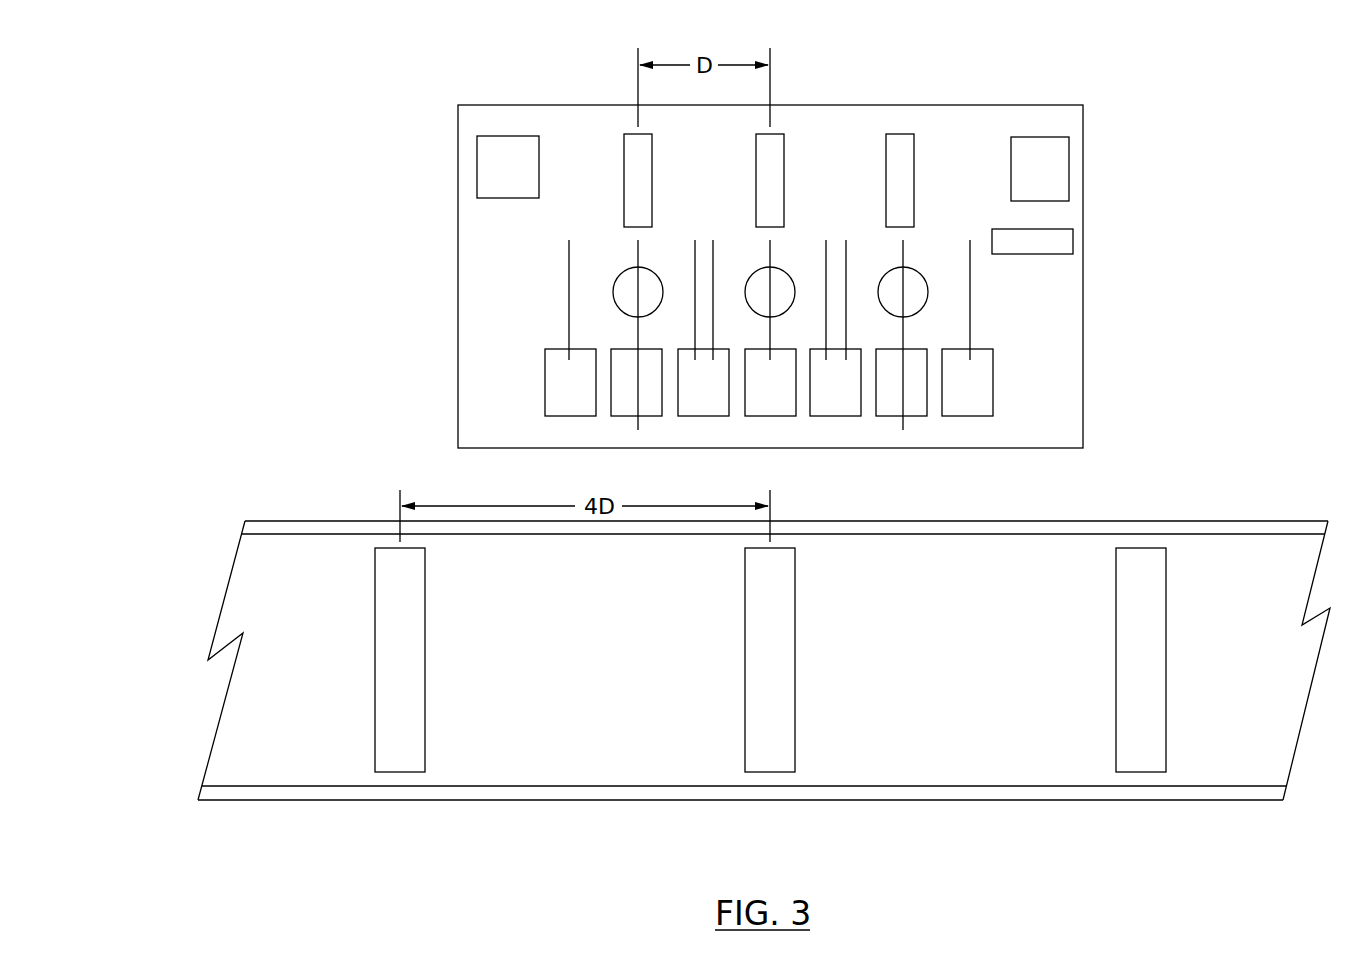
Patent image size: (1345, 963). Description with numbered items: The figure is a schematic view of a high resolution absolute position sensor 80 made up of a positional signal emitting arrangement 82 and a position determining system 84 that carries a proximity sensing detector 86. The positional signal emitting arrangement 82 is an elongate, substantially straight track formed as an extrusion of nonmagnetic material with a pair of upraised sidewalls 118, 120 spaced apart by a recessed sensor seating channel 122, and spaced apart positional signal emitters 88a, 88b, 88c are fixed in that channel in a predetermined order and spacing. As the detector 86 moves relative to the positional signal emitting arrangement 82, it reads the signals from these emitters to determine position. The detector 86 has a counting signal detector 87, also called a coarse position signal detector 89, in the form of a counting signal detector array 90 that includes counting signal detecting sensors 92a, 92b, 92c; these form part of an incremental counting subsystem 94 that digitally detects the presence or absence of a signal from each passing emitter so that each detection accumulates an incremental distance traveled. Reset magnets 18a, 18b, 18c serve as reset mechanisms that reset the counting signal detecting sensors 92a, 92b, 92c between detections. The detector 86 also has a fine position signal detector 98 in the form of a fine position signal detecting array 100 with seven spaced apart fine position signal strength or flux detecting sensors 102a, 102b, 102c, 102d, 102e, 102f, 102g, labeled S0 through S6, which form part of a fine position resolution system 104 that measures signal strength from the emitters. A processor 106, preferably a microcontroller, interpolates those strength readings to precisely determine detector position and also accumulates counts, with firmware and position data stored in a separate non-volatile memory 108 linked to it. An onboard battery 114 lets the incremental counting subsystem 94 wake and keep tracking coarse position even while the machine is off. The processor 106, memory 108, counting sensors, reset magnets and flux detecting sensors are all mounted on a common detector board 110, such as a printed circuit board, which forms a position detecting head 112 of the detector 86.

The high resolution absolute position sensor 80 is at (222, 402).
The positional signal emitting arrangement 82 is at (207, 568).
The position determining system 84 is at (303, 199).
The proximity sensing detector 86 is at (420, 121).
The counting signal detector 87 is at (550, 318).
The coarse position signal detector 89 is at (556, 339).
The counting signal detector array 90 is at (600, 269).
The counting signal detecting sensor 92a is at (625, 268).
The counting signal detecting sensor 92b is at (790, 268).
The counting signal detecting sensor 92c is at (915, 268).
The incremental counting subsystem 94 is at (936, 297).
The fine position signal detector 98 is at (1014, 375).
The fine position signal detecting array 100 is at (526, 410).
The fine position signal strength or flux detecting sensor 102a is at (570, 417).
The fine position signal strength or flux detecting sensor 102b is at (645, 417).
The fine position signal strength or flux detecting sensor 102c is at (709, 417).
The fine position signal strength or flux detecting sensor 102d is at (779, 417).
The fine position signal strength or flux detecting sensor 102e is at (824, 417).
The fine position signal strength or flux detecting sensor 102f is at (902, 417).
The fine position signal strength or flux detecting sensor 102g is at (967, 417).
The fine position resolution system 104 is at (1012, 402).
The processor 106 is at (1040, 137).
The memory 108 is at (1075, 240).
The detector board 110 is at (1073, 121).
The position detecting head 112 is at (1090, 168).
The onboard battery 114 is at (505, 136).
The upraised sidewall 118 is at (1253, 527).
The upraised sidewall 120 is at (1270, 793).
The recessed sensor seating channel 122 is at (1314, 664).
The reset magnet 18a is at (630, 134).
The reset magnet 18b is at (778, 134).
The reset magnet 18c is at (892, 134).
The positional signal emitter 88a is at (400, 772).
The positional signal emitter 88b is at (778, 772).
The positional signal emitter 88c is at (1145, 772).